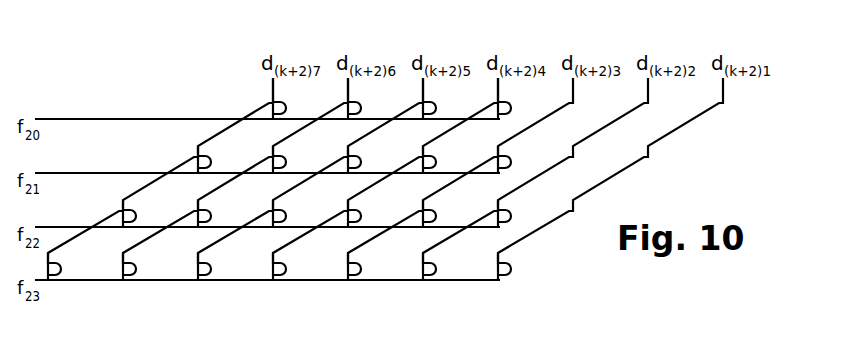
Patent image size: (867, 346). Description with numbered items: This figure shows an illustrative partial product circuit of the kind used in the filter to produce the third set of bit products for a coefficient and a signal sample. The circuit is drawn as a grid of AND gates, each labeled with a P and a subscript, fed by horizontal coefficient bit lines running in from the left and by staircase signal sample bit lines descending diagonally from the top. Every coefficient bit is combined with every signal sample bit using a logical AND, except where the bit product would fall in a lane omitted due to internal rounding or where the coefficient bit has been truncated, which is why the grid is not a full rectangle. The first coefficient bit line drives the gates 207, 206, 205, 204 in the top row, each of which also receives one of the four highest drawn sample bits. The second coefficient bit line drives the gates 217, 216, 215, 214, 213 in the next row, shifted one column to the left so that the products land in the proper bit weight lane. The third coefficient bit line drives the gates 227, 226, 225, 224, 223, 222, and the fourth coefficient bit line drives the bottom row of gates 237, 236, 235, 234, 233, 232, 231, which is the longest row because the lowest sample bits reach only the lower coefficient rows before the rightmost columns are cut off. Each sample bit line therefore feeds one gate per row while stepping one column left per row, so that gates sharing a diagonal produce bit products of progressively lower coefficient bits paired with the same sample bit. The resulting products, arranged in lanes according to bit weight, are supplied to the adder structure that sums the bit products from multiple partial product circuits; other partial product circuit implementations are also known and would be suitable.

The processing element P207 207 is at (300, 98).
The processing element P206 206 is at (375, 98).
The processing element P205 205 is at (450, 98).
The processing element P204 204 is at (525, 98).
The processing element P217 217 is at (225, 154).
The processing element P216 216 is at (300, 154).
The processing element P215 215 is at (375, 154).
The processing element P214 214 is at (450, 154).
The processing element P213 213 is at (525, 154).
The processing element P227 227 is at (150, 208).
The processing element P226 226 is at (225, 208).
The processing element P225 225 is at (300, 208).
The processing element P224 224 is at (375, 208).
The processing element P223 223 is at (450, 208).
The processing element P222 222 is at (525, 208).
The processing element P237 237 is at (75, 261).
The processing element P236 236 is at (150, 261).
The processing element P235 235 is at (225, 261).
The processing element P234 234 is at (300, 261).
The processing element P233 233 is at (375, 261).
The processing element P232 232 is at (450, 261).
The processing element P231 231 is at (525, 261).